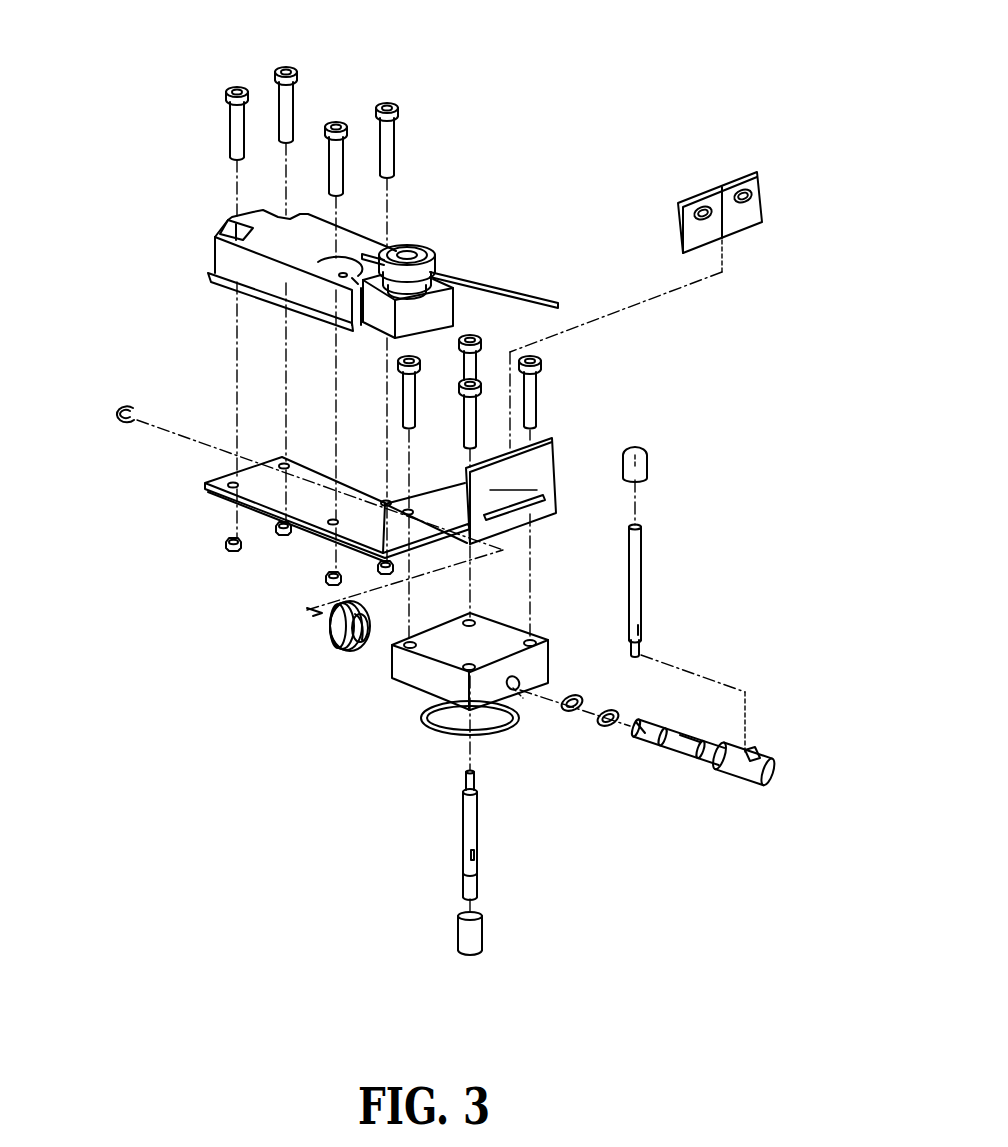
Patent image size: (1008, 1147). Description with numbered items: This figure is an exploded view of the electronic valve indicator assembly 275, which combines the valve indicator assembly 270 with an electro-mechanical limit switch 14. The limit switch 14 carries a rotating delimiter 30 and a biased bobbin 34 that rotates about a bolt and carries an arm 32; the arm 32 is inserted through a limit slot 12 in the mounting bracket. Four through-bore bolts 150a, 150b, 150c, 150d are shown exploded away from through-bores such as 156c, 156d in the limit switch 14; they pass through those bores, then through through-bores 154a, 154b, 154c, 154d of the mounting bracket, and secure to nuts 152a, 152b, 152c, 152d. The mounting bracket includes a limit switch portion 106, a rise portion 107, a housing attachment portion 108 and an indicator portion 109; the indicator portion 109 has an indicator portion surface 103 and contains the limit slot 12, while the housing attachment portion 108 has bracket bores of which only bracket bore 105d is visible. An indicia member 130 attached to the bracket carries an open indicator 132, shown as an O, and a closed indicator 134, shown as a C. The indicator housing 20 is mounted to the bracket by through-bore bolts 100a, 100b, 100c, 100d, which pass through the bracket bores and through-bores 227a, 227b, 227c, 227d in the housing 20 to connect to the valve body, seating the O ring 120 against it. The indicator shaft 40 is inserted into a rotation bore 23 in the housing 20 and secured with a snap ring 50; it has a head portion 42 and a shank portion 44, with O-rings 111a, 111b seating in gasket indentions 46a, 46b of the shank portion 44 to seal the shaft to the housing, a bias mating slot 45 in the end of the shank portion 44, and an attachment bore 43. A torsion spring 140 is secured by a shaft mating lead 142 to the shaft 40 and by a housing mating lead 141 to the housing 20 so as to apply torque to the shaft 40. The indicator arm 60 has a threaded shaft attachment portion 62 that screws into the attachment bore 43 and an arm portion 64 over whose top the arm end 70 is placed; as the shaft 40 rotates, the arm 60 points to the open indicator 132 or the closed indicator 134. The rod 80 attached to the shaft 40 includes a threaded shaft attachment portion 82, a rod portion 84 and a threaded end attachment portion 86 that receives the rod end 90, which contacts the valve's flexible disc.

The electronic valve indicator assembly 275 is at (510, 66).
The valve indicator assembly 270 is at (700, 132).
The through-bore bolt 150a is at (293, 95).
The through-bore bolt 150b is at (394, 133).
The through-bore bolt 150c is at (338, 165).
The through-bore bolt 150d is at (240, 128).
The limit switch 14 is at (205, 286).
The through-bore 156c is at (333, 265).
The through-bore 156d is at (217, 234).
The rotating delimiter 30 is at (443, 257).
The biased bobbin 34 is at (440, 248).
The arm 32 is at (527, 292).
The indicia member 130 is at (680, 208).
The open indicator 132 is at (700, 250).
The closed indicator 134 is at (755, 225).
The through-bore bolt 100a is at (483, 351).
The through-bore bolt 100b is at (540, 388).
The through-bore bolt 100c is at (472, 420).
The through-bore bolt 100d is at (412, 395).
The limit slot 12 is at (558, 489).
The indicator portion surface 103 is at (513, 479).
The indicator portion 109 is at (548, 450).
The housing attachment portion 108 is at (442, 520).
The bracket bore 105d is at (412, 508).
The limit switch portion 106 is at (320, 514).
The rise portion 107 is at (320, 538).
The through-bore 154a is at (285, 463).
The through-bore 154b is at (387, 500).
The through-bore 154c is at (330, 527).
The through-bore 154d is at (232, 483).
The nut 152a is at (278, 529).
The nut 152b is at (380, 572).
The nut 152c is at (330, 582).
The nut 152d is at (230, 544).
The snap ring 50 is at (120, 405).
The torsion spring 140 is at (348, 652).
The housing mating lead 141 is at (328, 647).
The shaft mating lead 142 is at (352, 651).
The indicator housing 20 is at (410, 690).
The through-bore 227a is at (475, 616).
The through-bore 227b is at (535, 637).
The through-bore 227c is at (458, 671).
The through-bore 227d is at (403, 647).
The rotation bore 23 is at (516, 692).
The O ring 120 is at (492, 742).
The O-ring 111a is at (585, 697).
The O-ring 111b is at (652, 699).
The indicator shaft 40 is at (733, 782).
The head portion 42 is at (760, 774).
The attachment bore 43 is at (752, 756).
The shank portion 44 is at (692, 740).
The bias mating slot 45 is at (640, 738).
The gasket indention 46a is at (660, 746).
The gasket indention 46b is at (702, 752).
The indicator arm 60 is at (642, 535).
The shaft attachment portion 62 is at (641, 650).
The arm portion 64 is at (642, 588).
The arm end 70 is at (648, 462).
The rod 80 is at (478, 795).
The shaft attachment portion 82 is at (465, 778).
The rod portion 84 is at (462, 853).
The end attachment portion 86 is at (462, 895).
The rod end 90 is at (482, 943).